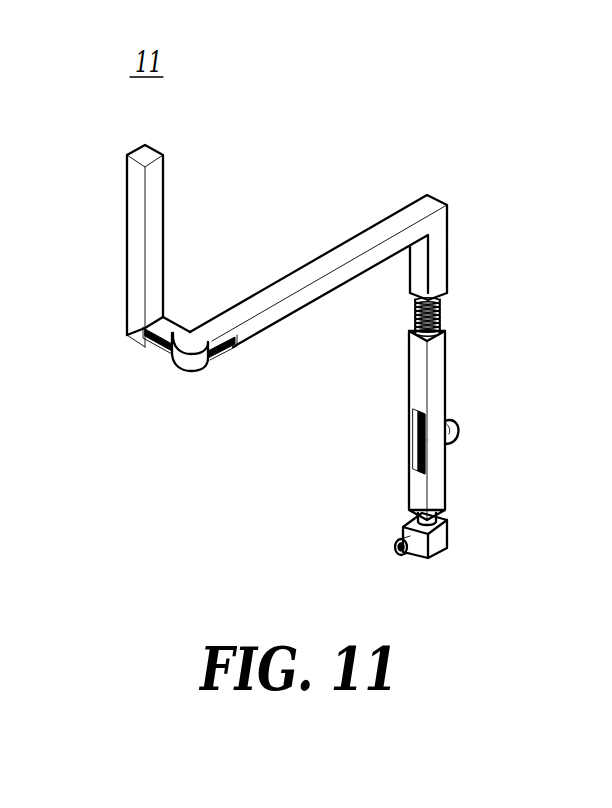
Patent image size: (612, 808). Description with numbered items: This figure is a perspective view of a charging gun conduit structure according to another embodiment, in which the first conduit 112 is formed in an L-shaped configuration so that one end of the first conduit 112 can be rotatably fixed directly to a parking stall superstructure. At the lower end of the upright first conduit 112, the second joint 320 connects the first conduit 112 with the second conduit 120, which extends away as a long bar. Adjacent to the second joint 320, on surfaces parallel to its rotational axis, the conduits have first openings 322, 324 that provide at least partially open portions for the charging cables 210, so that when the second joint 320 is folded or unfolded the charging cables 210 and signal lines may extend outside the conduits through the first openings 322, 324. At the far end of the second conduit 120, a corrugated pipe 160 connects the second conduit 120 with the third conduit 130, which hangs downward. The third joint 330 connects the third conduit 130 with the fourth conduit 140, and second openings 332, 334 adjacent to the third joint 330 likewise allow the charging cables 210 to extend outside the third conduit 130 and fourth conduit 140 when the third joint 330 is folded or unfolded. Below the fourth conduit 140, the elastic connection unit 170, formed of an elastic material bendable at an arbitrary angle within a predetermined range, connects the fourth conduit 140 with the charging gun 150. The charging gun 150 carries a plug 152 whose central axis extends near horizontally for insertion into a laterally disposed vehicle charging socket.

The first conduit 112 is at (113, 240).
The second conduit 120 is at (318, 250).
The third conduit 130 is at (461, 385).
The fourth conduit 140 is at (462, 480).
The charging gun 150 is at (460, 535).
The plug 152 is at (370, 560).
The corrugated pipe 160 is at (463, 312).
The elastic connection unit 170 is at (392, 506).
The charging cables 210 is at (140, 348).
The second joint 320 is at (198, 321).
The first opening 322 is at (140, 365).
The first opening 324 is at (238, 369).
The third joint 330 is at (486, 428).
The second opening 332 is at (382, 435).
The second opening 334 is at (382, 442).